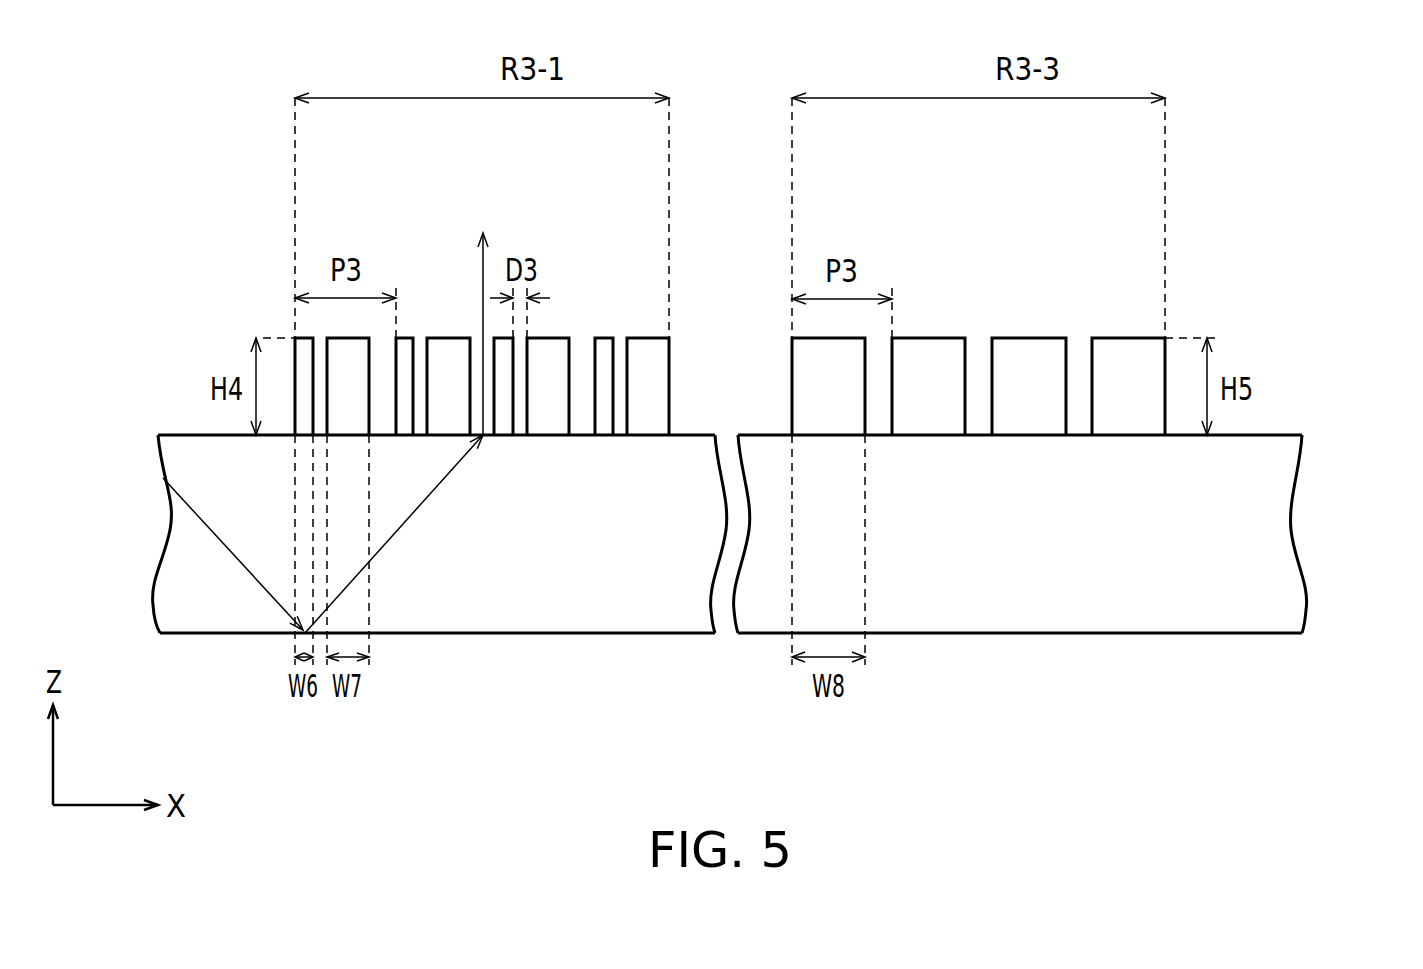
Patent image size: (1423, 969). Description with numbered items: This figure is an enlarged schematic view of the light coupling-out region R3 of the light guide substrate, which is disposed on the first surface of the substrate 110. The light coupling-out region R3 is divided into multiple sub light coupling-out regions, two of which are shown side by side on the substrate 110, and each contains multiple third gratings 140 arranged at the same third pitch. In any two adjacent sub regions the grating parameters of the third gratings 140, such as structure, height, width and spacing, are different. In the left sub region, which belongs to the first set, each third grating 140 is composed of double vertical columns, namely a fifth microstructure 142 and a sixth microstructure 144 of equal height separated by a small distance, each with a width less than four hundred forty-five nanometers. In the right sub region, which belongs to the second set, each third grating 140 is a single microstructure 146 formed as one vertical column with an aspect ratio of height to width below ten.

The substrate 110 is at (1260, 538).
The third gratings 140 is at (482, 315).
The fifth microstructure 142 is at (604, 350).
The sixth microstructure 144 is at (655, 350).
The single microstructure 146 is at (1030, 350).
The light coupling-out region R3 is at (1303, 302).